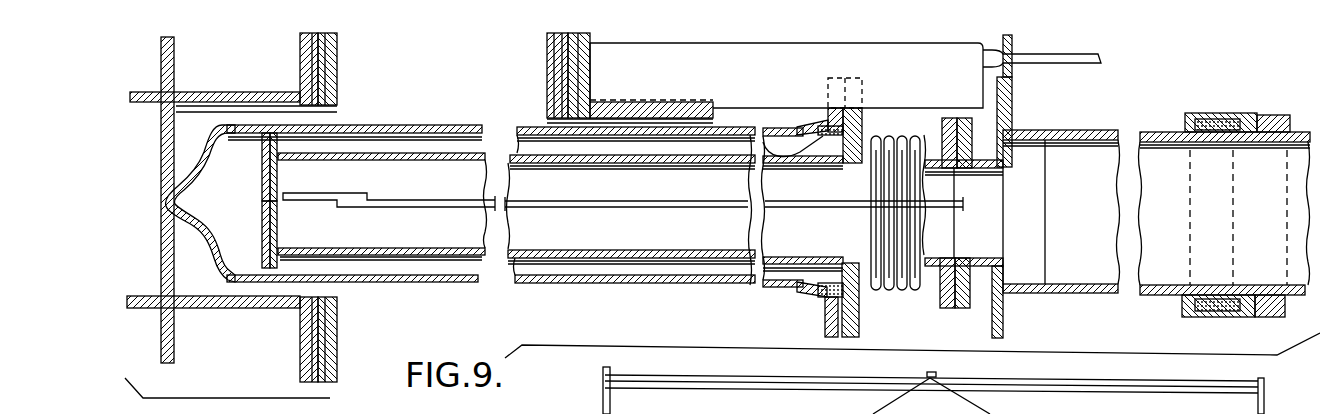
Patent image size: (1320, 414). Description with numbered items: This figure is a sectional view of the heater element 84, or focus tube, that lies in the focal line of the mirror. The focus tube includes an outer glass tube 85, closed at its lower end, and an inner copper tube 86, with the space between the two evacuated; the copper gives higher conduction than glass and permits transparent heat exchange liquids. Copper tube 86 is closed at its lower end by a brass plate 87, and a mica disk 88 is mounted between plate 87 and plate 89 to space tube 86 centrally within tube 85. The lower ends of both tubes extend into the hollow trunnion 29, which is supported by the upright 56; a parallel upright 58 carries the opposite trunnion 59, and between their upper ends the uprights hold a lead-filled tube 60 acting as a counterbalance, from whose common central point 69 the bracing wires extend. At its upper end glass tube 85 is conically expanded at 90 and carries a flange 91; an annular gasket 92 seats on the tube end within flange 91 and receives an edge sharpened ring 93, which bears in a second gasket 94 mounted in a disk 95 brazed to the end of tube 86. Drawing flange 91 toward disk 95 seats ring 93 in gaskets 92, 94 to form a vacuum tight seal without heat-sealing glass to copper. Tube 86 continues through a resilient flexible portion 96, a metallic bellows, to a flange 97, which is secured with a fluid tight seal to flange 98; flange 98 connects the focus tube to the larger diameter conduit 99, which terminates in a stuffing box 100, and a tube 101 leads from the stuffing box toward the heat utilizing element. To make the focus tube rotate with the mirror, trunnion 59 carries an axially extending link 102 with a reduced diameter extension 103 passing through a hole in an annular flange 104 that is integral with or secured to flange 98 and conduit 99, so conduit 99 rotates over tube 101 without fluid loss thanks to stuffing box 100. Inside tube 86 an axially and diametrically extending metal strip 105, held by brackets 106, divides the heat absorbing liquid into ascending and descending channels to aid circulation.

The trunnion 29 is at (146, 92).
The upright 56 is at (336, 76).
The outer glass tube 85 is at (370, 127).
The heater element 84 is at (408, 147).
The inner copper tube 86 is at (428, 155).
The brass plate 87 is at (281, 181).
The mica disk 88 is at (281, 222).
The plate 89 is at (261, 203).
The brackets 106 is at (327, 193).
The metal strip 105 is at (598, 206).
The upright 58 is at (547, 63).
The trunnion 59 is at (548, 106).
The link 102 is at (641, 63).
The extension 103 is at (1100, 59).
The annular flange 104 is at (1008, 100).
The flange 98 is at (968, 285).
The flange 97 is at (942, 278).
The conduit 99 is at (1032, 130).
The stuffing box 100 is at (1228, 112).
The tube 101 is at (1302, 130).
The conically expanded portion 90 is at (766, 143).
The flange 91 is at (812, 126).
The annular gasket 92 is at (825, 134).
The edge sharpened ring 93 is at (835, 134).
The second gasket 94 is at (863, 118).
The disk 95 is at (864, 127).
The resilient flexible portion 96 is at (894, 288).
The lead-filled tube 60 is at (1154, 386).
The central point 69 is at (938, 373).